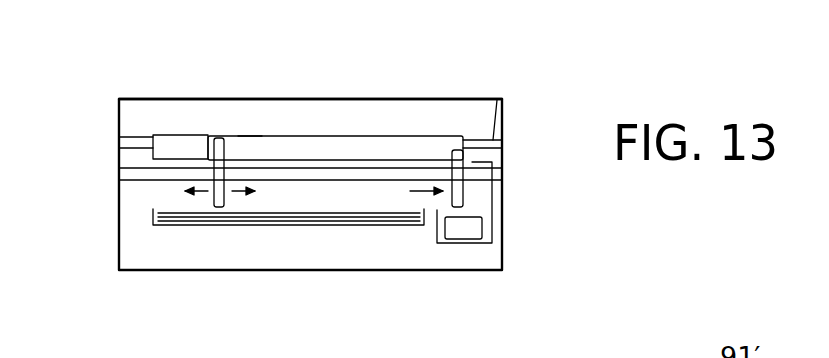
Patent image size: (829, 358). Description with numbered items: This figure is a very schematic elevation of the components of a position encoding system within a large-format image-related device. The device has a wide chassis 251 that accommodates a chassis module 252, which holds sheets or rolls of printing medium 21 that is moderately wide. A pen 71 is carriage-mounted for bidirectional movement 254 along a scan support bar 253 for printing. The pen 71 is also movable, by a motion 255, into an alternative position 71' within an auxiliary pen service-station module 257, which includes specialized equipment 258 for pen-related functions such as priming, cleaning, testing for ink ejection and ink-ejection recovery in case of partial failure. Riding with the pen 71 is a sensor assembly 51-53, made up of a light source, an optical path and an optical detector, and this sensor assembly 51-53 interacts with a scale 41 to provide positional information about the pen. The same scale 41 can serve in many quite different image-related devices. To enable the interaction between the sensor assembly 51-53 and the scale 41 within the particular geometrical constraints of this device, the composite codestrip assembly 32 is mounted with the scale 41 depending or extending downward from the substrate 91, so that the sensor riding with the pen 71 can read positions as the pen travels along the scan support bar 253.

The chassis 251 is at (502, 258).
The composite codestrip assembly 32 is at (438, 125).
The substrate 91 is at (497, 100).
The scan support bar 253 is at (122, 168).
The scale 41 is at (363, 143).
The sensor assembly 51-53 is at (250, 142).
The pen 71 is at (189, 123).
The bidirectional movement 254 is at (208, 197).
The chassis module 252 is at (183, 228).
The printing medium 21 is at (257, 215).
The motion 255 is at (410, 192).
The alternative position 71' is at (426, 239).
The auxiliary pen service-station module 257 is at (492, 205).
The specialized equipment 258 is at (470, 229).